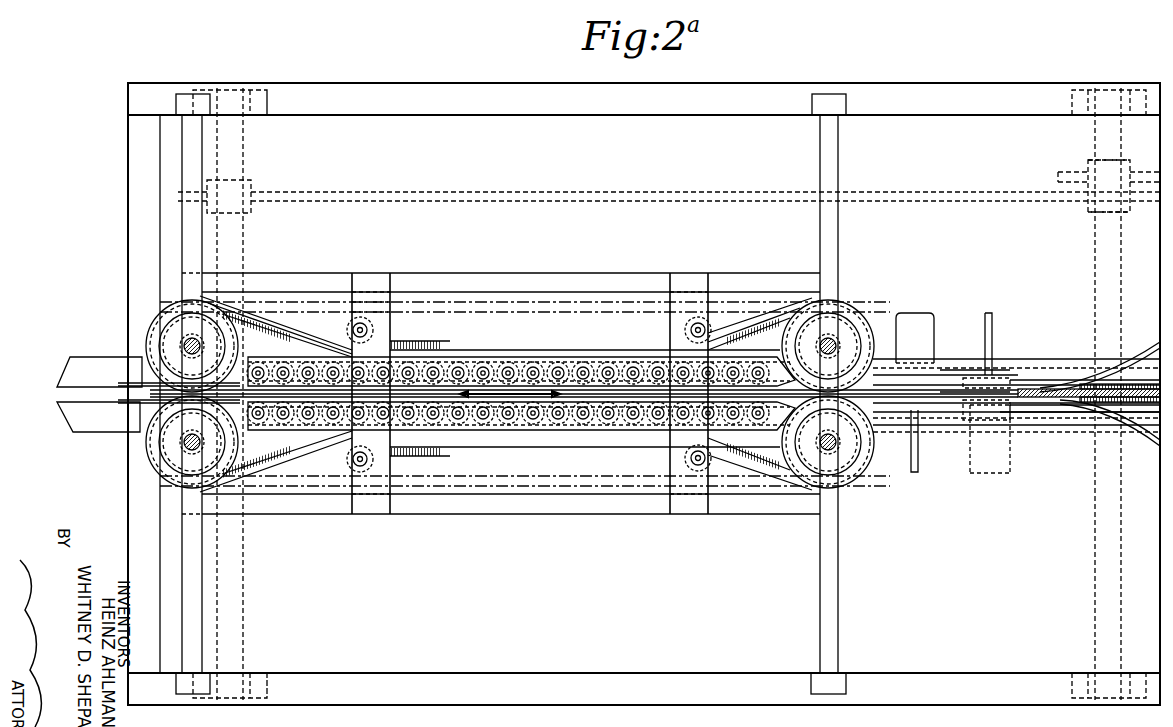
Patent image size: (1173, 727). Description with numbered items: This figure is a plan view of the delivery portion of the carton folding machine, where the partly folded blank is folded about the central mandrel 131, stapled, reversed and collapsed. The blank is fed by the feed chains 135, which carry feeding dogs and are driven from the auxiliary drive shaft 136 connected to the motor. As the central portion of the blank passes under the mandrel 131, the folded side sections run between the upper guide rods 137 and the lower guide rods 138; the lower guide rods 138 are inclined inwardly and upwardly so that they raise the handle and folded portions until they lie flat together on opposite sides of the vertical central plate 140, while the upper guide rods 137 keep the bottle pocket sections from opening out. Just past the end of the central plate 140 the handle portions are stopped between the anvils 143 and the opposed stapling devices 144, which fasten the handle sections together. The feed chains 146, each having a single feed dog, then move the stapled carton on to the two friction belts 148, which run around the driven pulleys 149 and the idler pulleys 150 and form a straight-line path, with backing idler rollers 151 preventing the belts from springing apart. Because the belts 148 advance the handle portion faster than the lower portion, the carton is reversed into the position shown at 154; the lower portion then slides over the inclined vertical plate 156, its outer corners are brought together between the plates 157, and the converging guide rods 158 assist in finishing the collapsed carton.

The central mandrel 131 is at (1046, 417).
The feed chains 135 is at (1042, 358).
The auxiliary drive shaft 136 is at (1094, 236).
The upper guide rods 137 is at (1130, 384).
The lower guide rods 138 is at (1105, 375).
The vertical central plate 140 is at (1022, 388).
The anvils 143 is at (985, 312).
The stapling devices 144 is at (918, 312).
The feed chains 146 is at (952, 372).
The friction belts 148 is at (450, 334).
The driven pulleys 149 is at (856, 322).
The idler pulleys 150 is at (160, 338).
The backing idler rollers 151 is at (575, 372).
The carton position 154 is at (528, 398).
The inclined vertical plate 156 is at (150, 392).
The plates 157 is at (150, 410).
The converging guide rods 158 is at (150, 402).